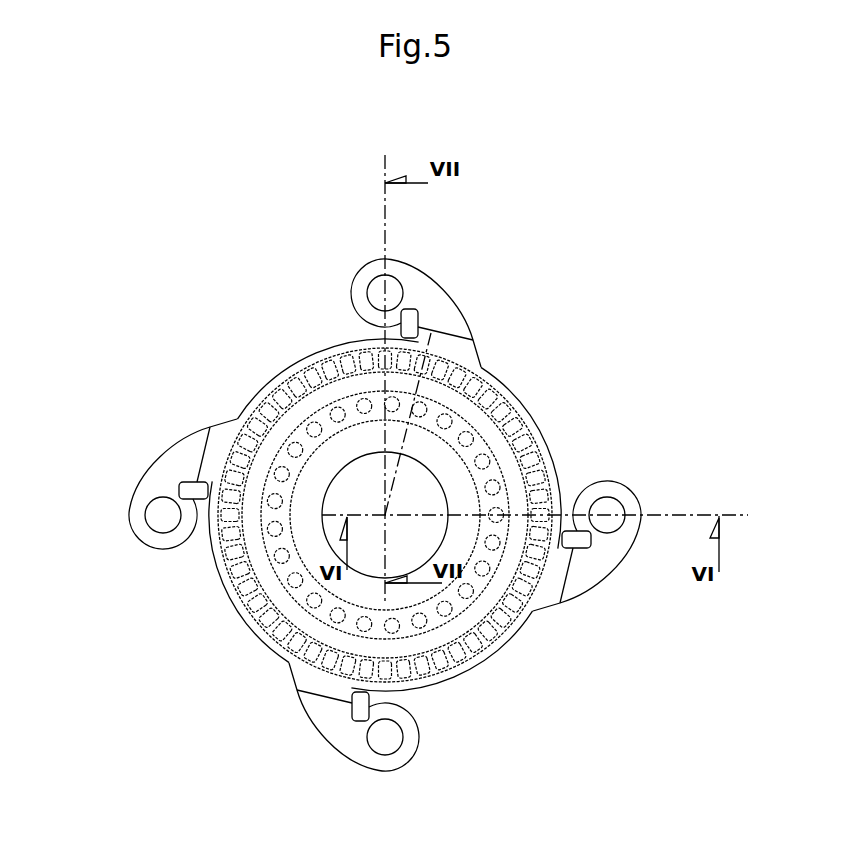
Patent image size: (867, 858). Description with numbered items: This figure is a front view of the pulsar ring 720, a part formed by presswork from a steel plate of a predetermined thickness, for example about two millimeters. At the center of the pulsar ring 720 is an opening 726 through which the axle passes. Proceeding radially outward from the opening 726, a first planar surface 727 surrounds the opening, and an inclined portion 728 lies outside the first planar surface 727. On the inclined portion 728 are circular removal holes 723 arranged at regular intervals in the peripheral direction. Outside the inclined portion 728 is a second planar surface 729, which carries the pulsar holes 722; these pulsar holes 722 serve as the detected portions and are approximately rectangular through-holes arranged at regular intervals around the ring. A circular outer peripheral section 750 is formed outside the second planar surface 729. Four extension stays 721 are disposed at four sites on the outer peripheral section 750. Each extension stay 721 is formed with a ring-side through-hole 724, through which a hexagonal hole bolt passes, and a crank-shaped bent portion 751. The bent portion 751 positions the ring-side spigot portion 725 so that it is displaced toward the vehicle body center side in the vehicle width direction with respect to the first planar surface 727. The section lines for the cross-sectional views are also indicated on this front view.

The pulsar ring 720 is at (525, 288).
The extension stay 721 is at (433, 280).
The pulsar hole 722 is at (528, 427).
The circular removal hole 723 is at (472, 431).
The ring-side through-hole 724 is at (376, 289).
The ring-side spigot portion 725 is at (391, 335).
The opening 726 is at (366, 494).
The first planar surface 727 is at (427, 592).
The inclined portion 728 is at (463, 602).
The second planar surface 729 is at (500, 595).
The outer peripheral section 750 is at (256, 386).
The bent portion 751 is at (452, 328).